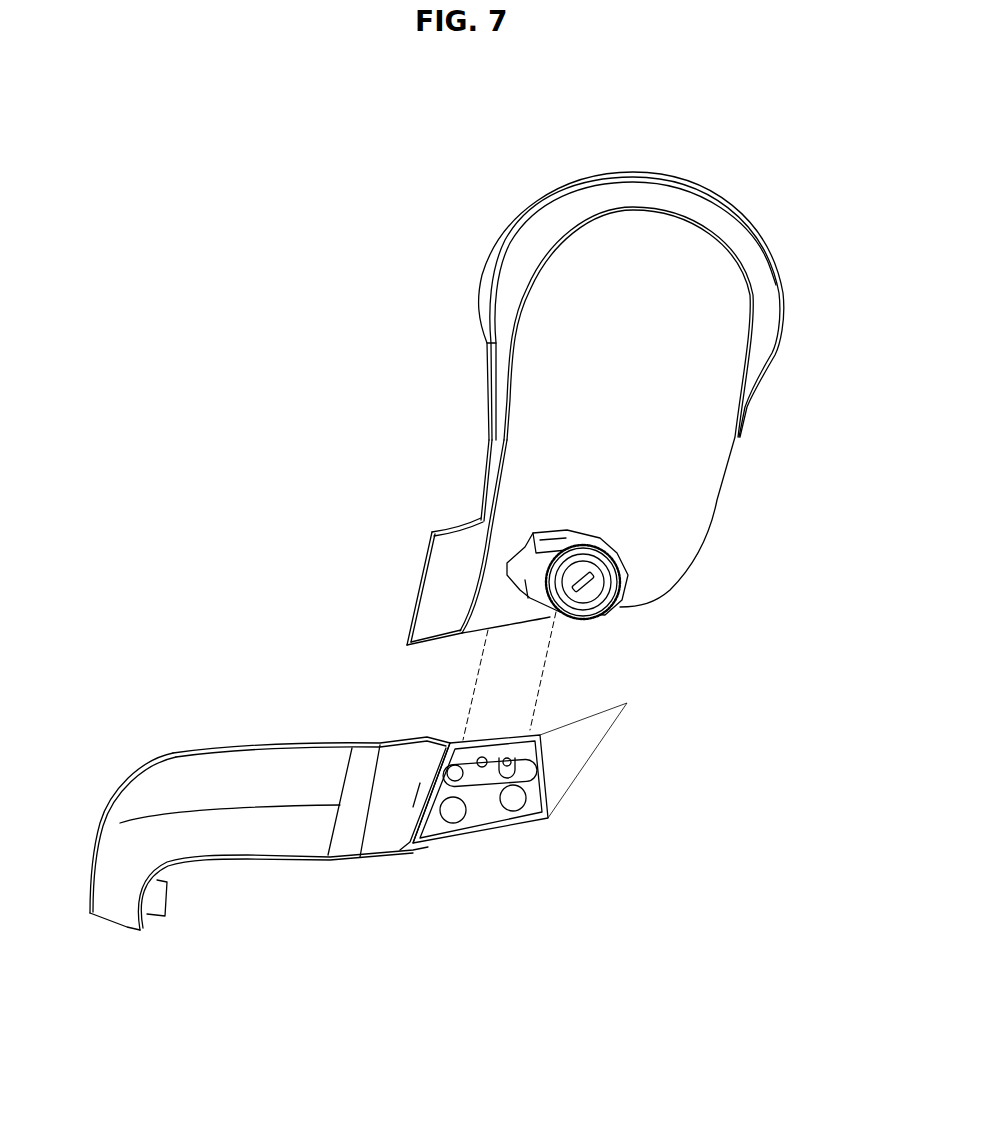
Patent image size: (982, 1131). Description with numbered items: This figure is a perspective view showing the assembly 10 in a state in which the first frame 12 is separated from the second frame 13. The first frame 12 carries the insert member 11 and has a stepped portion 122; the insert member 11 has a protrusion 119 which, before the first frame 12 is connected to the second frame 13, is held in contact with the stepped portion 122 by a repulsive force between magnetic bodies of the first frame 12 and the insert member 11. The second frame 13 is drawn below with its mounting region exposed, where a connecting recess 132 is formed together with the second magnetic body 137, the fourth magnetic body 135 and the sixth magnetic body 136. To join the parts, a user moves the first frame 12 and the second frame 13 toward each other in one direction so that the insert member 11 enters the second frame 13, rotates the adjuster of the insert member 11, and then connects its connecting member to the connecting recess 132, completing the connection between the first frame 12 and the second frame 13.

The headset 10 is at (512, 99).
The insert member 11 is at (649, 590).
The first frame 12 is at (740, 443).
The second frame 13 is at (378, 817).
The protrusion 119 is at (537, 540).
The stepped portion 122 is at (567, 537).
The connecting recess 132 is at (533, 790).
The fourth magnetic body 135 is at (547, 788).
The sixth magnetic body 136 is at (527, 727).
The second magnetic body 137 is at (537, 823).